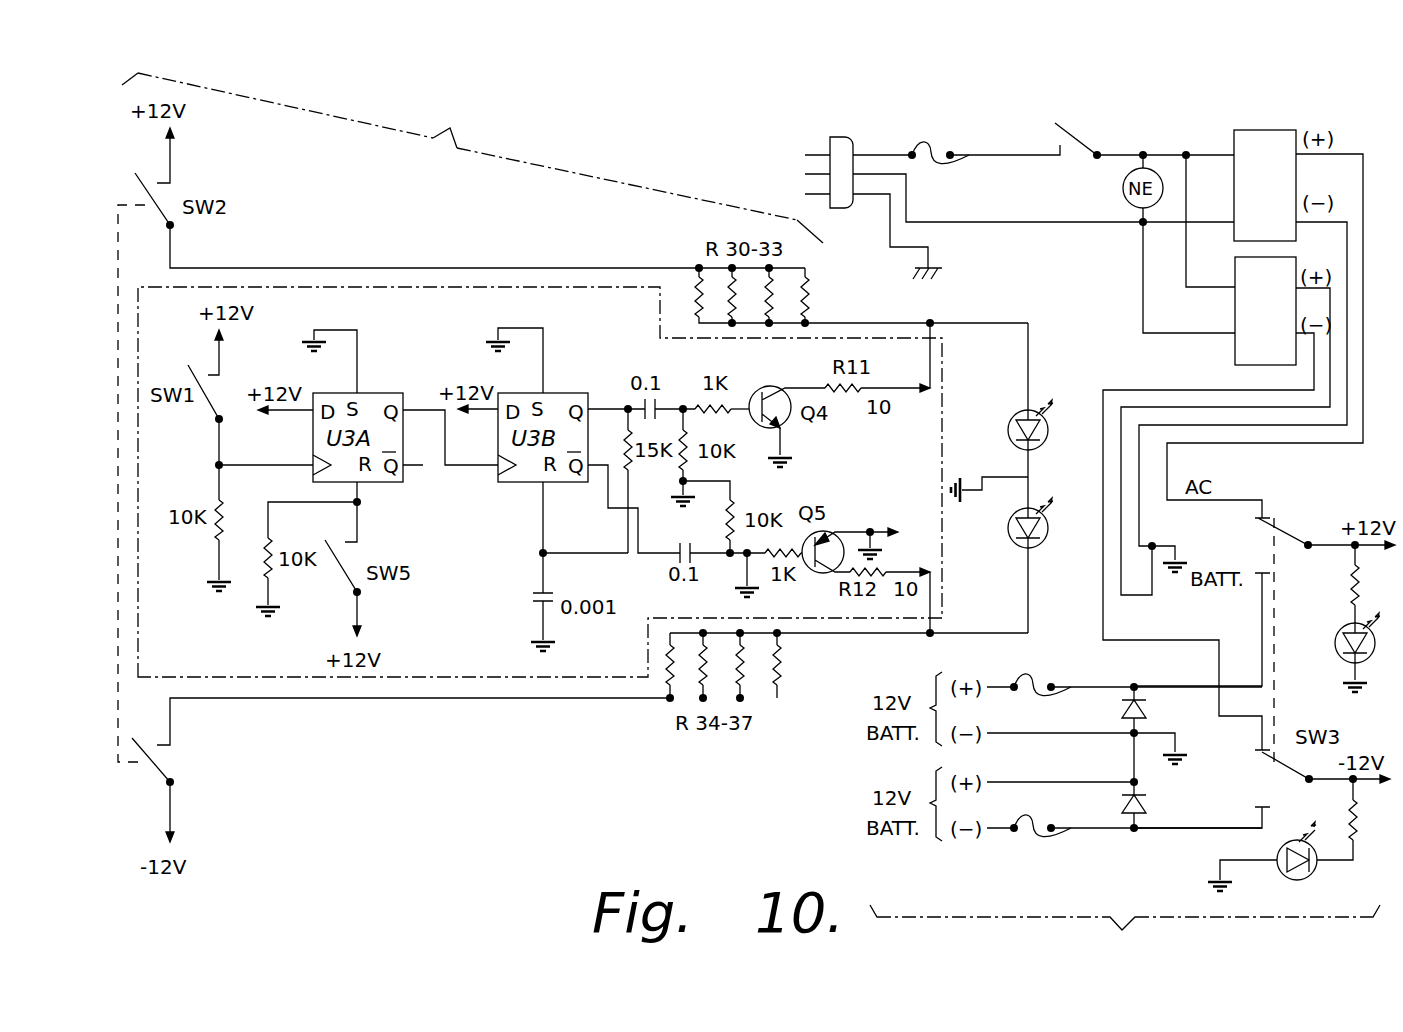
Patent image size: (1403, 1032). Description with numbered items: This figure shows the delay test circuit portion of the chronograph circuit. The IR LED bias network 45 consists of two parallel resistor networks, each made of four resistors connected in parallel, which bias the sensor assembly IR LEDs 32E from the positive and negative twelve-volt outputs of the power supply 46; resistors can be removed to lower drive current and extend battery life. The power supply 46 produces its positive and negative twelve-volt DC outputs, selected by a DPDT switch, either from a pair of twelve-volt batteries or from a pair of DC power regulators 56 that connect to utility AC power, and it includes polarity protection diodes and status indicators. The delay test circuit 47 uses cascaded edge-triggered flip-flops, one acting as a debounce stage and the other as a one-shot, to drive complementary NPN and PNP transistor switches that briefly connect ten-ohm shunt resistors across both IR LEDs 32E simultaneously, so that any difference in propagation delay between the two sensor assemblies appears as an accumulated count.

The IR LED bias network 45 is at (472, 158).
The power supply 46 is at (1125, 930).
The delay test circuit 47 is at (440, 677).
The DC power regulators 56 is at (1233, 130).
The IR LEDs 32E is at (1017, 415).